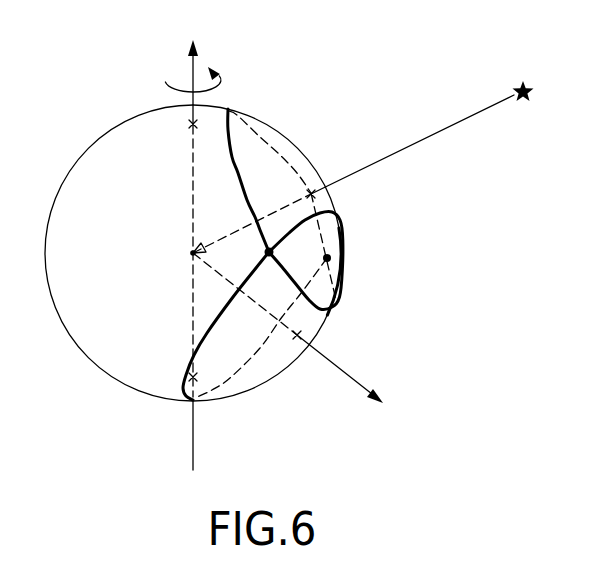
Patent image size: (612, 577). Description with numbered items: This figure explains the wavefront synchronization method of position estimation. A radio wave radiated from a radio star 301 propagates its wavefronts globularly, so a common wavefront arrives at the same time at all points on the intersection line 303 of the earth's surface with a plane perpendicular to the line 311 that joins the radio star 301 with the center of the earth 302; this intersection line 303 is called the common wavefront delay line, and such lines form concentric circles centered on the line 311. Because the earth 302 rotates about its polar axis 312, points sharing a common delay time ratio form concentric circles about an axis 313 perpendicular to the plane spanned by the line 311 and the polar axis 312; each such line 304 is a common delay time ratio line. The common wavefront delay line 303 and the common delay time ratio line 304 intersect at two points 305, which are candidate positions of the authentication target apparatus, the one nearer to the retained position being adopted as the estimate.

The radio star 301 is at (527, 78).
The earth 302 is at (73, 312).
The common wavefront delay line 303 is at (232, 163).
The common delay time ratio line 304 is at (190, 337).
The intersection points 305 is at (333, 256).
The line joining the radio star with the center of the earth 311 is at (465, 119).
The polar axis of the earth 312 is at (193, 447).
The axis perpendicular to the plane of the star line and polar axis 313 is at (354, 381).